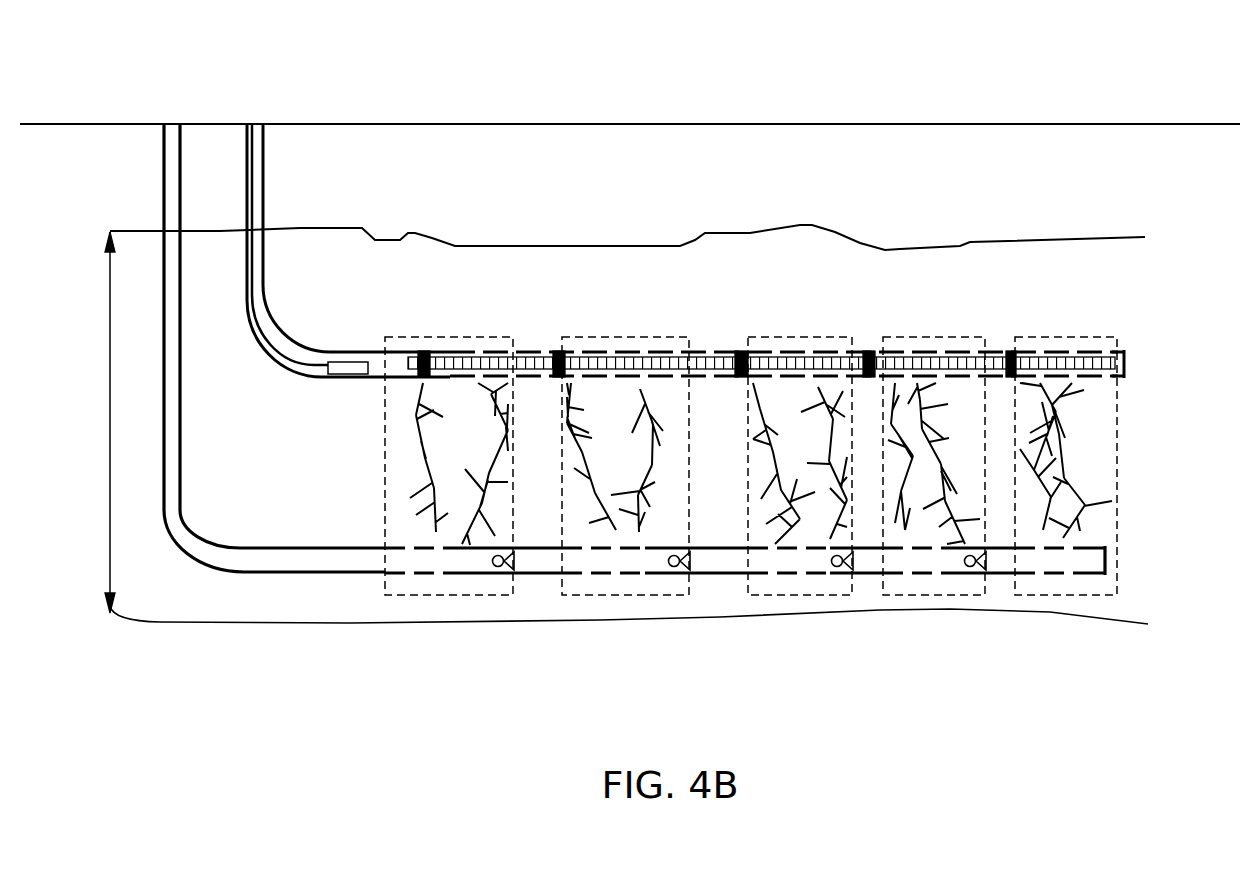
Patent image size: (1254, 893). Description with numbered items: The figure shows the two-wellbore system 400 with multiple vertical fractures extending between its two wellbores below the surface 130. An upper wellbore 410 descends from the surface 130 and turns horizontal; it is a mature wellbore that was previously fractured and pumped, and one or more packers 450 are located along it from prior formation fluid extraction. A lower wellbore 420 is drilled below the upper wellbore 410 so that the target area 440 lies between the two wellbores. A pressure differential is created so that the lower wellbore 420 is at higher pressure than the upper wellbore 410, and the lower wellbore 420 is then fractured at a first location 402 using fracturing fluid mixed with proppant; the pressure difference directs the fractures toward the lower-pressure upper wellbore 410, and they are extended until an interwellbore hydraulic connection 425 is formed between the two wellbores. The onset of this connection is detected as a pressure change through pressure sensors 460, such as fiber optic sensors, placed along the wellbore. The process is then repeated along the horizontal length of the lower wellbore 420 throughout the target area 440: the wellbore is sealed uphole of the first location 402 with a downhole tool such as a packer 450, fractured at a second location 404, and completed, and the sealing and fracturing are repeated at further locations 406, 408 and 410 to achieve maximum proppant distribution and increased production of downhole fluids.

The two-wellbore system 400 is at (149, 29).
The surface 130 is at (773, 124).
The lower wellbore 420 is at (162, 172).
The upper wellbore 410 is at (264, 186).
The target area 440 is at (108, 432).
The pressure sensor 460 is at (345, 362).
The packer 450 is at (422, 352).
The fracturing location 408 is at (618, 337).
The fracturing location 406 is at (798, 337).
The second location 404 is at (932, 337).
The first location 402 is at (1068, 337).
The interwellbore hydraulic connection 425 is at (462, 547).